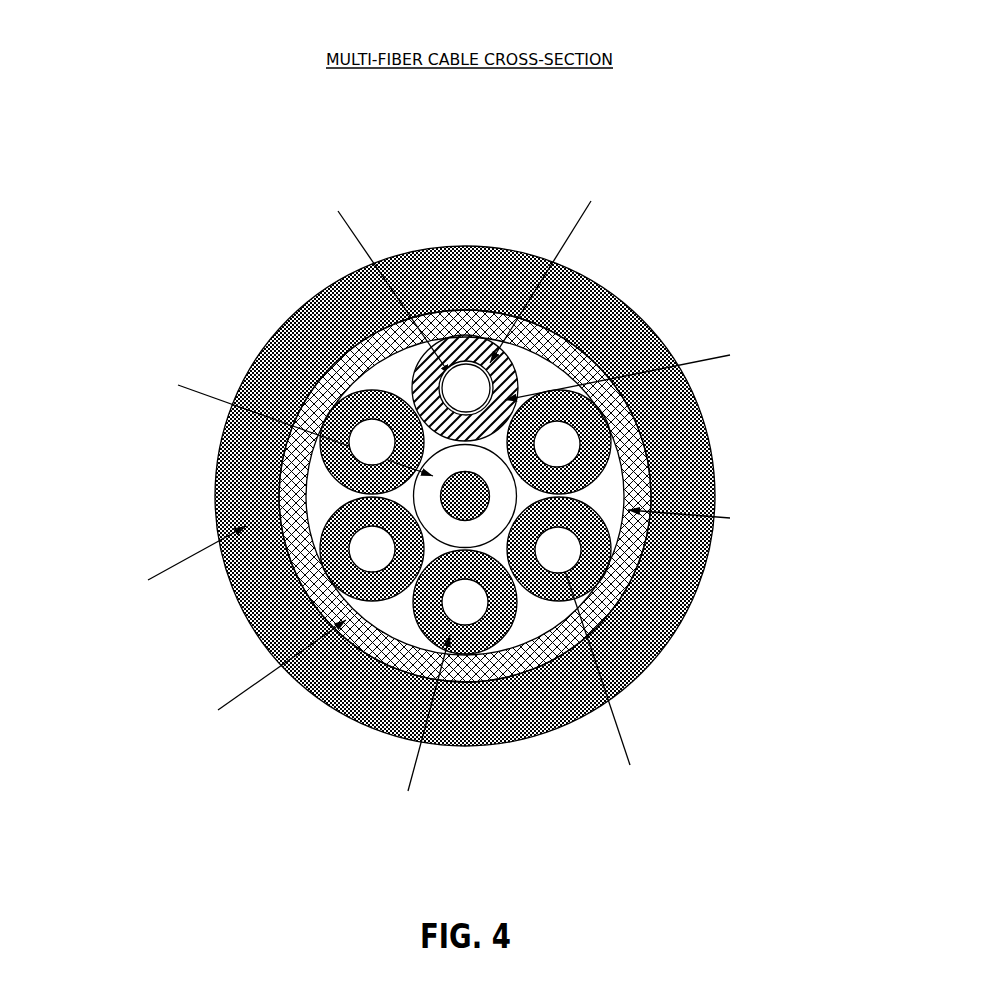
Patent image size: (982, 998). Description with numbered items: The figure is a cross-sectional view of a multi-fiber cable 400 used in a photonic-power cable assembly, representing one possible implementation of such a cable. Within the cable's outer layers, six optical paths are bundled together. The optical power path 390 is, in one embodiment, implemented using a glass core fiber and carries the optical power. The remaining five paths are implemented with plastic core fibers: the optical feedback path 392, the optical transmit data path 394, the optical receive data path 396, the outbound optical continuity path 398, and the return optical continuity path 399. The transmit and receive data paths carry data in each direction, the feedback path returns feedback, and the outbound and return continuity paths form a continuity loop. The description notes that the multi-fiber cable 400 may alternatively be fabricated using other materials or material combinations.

The multi-fiber cable 400 is at (690, 188).
The optical power path 390 is at (471, 409).
The optical feedback path 392 is at (562, 461).
The optical transmit data path 394 is at (562, 530).
The optical receive data path 396 is at (471, 576).
The outbound optical continuity path 398 is at (374, 528).
The return optical continuity path 399 is at (374, 421).